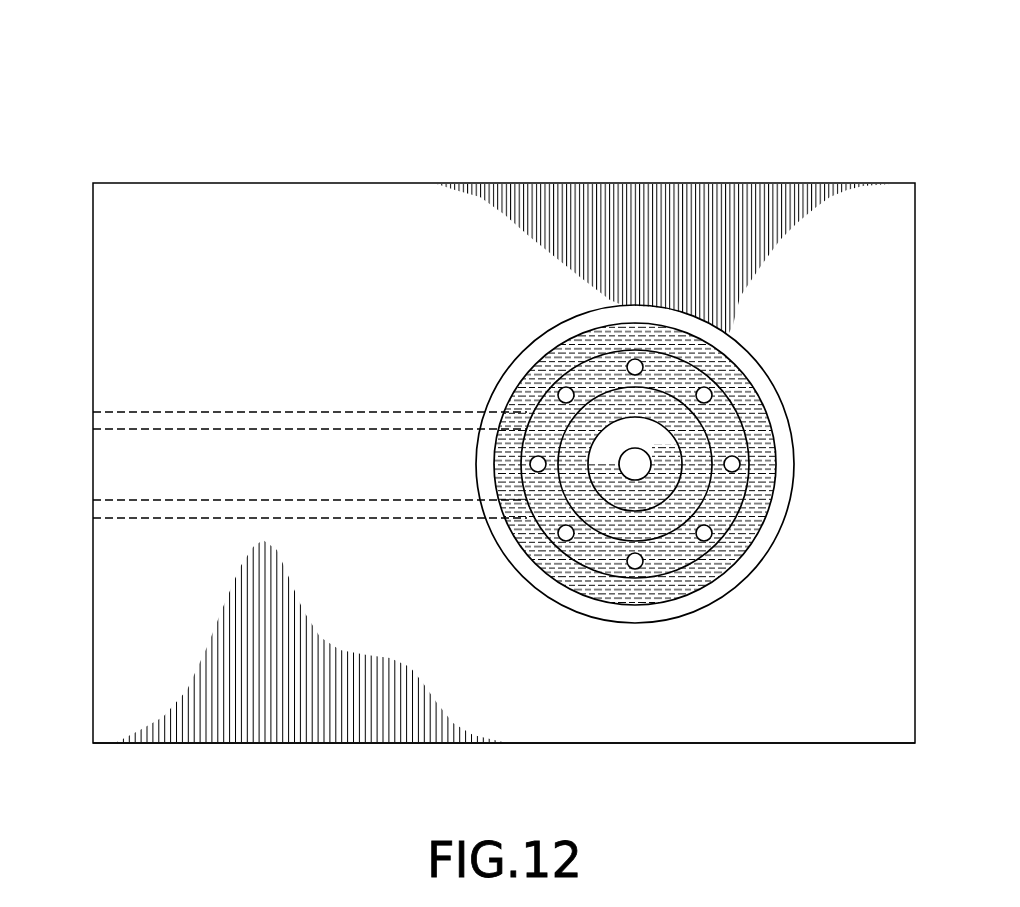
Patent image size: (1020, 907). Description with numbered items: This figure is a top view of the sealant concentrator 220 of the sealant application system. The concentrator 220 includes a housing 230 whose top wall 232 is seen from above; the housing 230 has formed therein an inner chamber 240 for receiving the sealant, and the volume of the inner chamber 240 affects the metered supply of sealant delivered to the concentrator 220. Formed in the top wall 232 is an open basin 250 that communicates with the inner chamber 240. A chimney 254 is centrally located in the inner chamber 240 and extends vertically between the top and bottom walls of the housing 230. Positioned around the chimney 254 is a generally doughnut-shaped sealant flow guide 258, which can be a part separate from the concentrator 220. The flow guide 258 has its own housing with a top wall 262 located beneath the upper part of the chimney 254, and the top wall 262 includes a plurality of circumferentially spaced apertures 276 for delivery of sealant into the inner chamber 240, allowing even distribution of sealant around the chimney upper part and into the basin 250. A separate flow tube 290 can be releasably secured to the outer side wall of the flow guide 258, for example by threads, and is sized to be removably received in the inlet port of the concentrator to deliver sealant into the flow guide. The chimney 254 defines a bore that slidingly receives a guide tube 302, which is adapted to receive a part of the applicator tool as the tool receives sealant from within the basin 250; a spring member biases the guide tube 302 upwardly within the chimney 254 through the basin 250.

The sealant concentrator 220 is at (397, 98).
The housing 230 is at (263, 207).
The top wall 232 is at (633, 722).
The inner chamber 240 is at (563, 567).
The open basin 250 is at (608, 608).
The chimney 254 is at (687, 503).
The sealant flow guide 258 is at (685, 378).
The top wall 262 is at (733, 438).
The apertures 276 is at (710, 533).
The flow tube 290 is at (165, 510).
The guide tube 302 is at (647, 500).